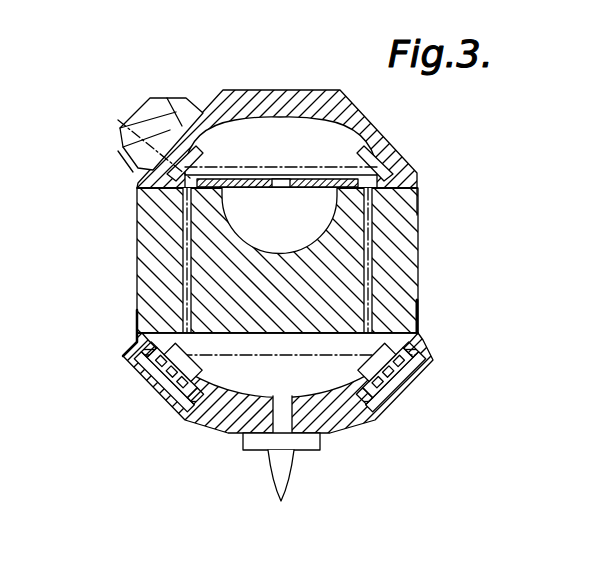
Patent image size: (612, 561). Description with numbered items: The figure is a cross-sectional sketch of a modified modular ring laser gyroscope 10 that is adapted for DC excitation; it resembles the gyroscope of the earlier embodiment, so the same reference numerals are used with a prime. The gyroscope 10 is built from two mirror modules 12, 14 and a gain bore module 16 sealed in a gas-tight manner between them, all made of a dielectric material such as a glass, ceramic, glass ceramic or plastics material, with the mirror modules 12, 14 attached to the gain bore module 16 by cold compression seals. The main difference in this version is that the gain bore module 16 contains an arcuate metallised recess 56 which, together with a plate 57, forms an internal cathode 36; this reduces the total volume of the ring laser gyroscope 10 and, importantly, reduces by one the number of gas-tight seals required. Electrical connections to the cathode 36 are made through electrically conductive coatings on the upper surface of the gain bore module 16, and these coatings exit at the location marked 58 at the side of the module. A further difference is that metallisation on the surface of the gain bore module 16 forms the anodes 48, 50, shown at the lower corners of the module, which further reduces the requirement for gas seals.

The ring laser gyroscope 10 is at (126, 104).
The mirror module 12 is at (469, 95).
The mirror module 14 is at (140, 394).
The gain bore module 16 is at (118, 215).
The internal cathode 36 is at (288, 162).
The anode 48 is at (137, 325).
The anode 50 is at (482, 268).
The arcuate metallised recess 56 is at (296, 190).
The plate 57 is at (254, 180).
The cathode connection exit 58 is at (418, 203).